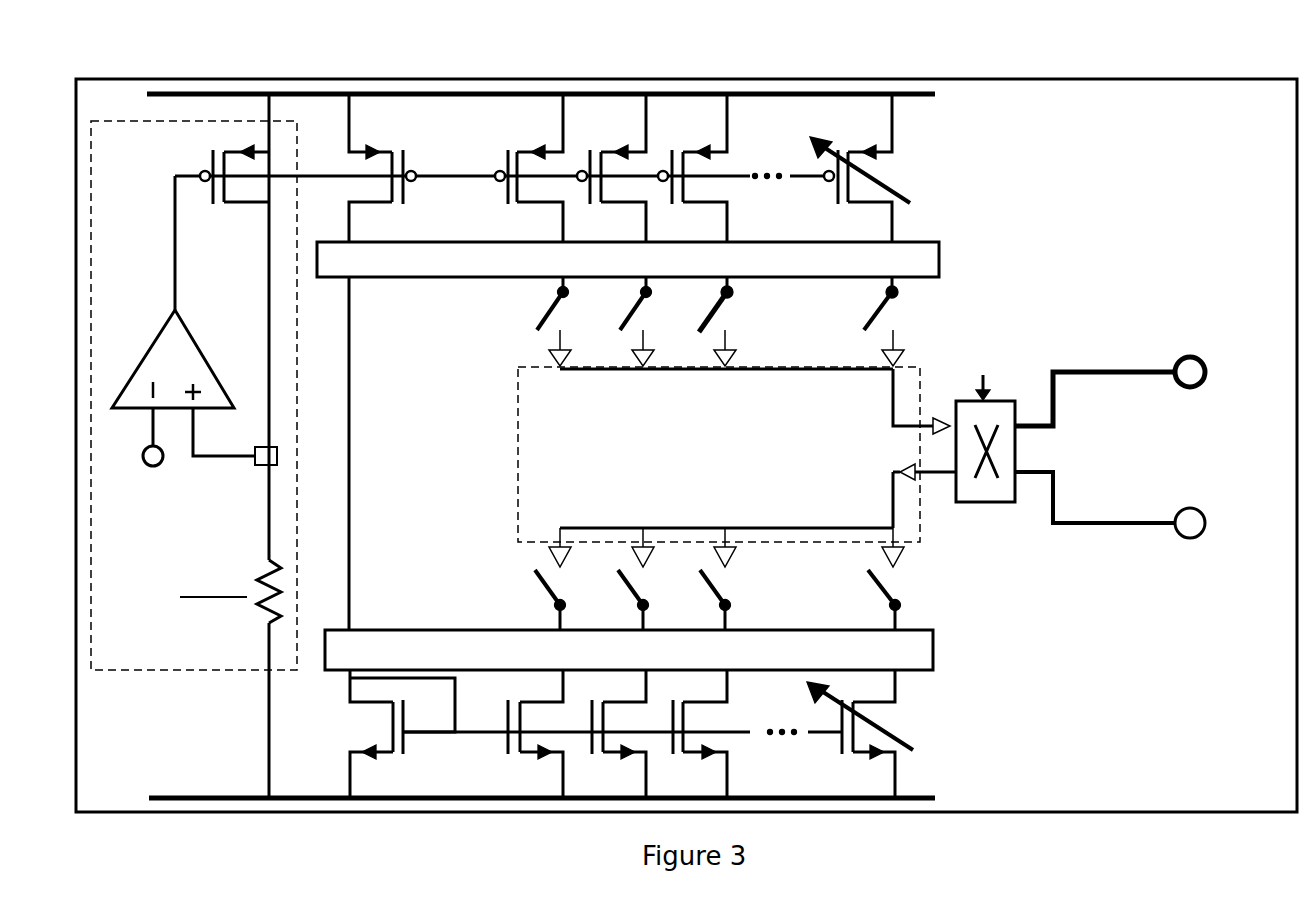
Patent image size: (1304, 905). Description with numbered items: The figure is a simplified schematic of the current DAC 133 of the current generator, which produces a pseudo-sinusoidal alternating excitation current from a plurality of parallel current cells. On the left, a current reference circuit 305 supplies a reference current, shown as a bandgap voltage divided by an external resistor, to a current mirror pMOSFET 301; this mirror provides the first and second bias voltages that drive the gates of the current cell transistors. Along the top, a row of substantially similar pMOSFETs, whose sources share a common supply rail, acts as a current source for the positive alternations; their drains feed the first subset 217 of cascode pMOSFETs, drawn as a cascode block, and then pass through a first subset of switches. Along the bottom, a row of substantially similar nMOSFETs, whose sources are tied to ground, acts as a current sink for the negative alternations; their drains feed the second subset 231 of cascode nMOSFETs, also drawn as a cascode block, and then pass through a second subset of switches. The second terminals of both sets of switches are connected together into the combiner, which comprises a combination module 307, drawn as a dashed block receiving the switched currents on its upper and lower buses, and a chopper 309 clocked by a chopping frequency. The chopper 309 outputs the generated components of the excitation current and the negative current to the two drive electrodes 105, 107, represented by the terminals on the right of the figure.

The current mirror pMOSFET 301 is at (247, 140).
The current reference circuit 305 is at (194, 424).
The first subset of cascode pMOSFETs 217 is at (939, 251).
The combination module 307 is at (537, 366).
The chopper 309 is at (985, 503).
The drive electrode 105 is at (1210, 368).
The drive electrode 107 is at (1210, 523).
The second subset of cascode nMOSFETs 231 is at (933, 658).
The current DAC 133 is at (343, 812).